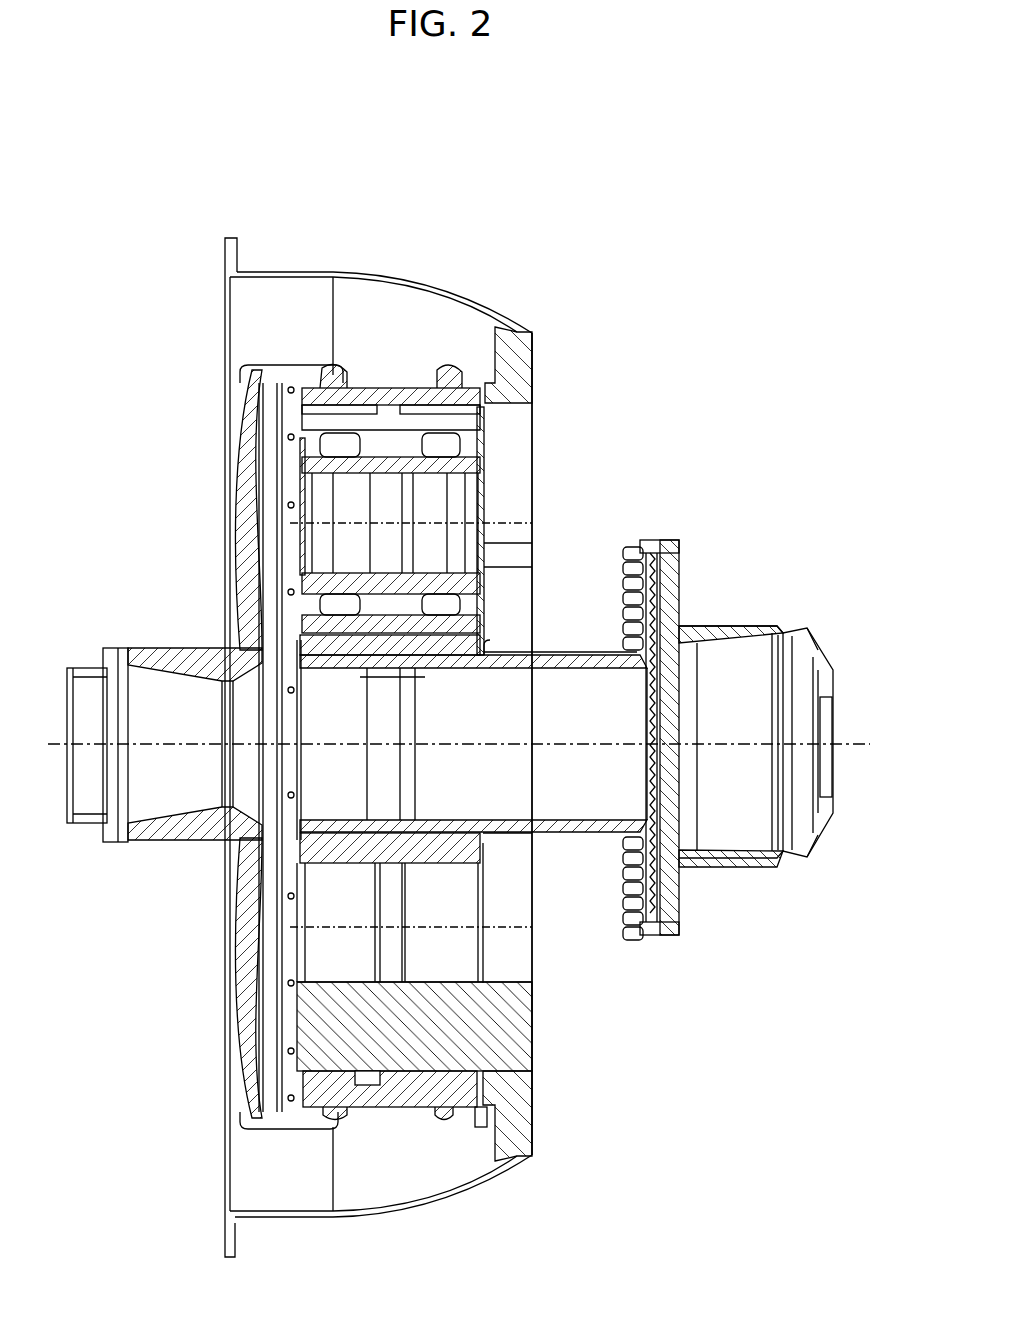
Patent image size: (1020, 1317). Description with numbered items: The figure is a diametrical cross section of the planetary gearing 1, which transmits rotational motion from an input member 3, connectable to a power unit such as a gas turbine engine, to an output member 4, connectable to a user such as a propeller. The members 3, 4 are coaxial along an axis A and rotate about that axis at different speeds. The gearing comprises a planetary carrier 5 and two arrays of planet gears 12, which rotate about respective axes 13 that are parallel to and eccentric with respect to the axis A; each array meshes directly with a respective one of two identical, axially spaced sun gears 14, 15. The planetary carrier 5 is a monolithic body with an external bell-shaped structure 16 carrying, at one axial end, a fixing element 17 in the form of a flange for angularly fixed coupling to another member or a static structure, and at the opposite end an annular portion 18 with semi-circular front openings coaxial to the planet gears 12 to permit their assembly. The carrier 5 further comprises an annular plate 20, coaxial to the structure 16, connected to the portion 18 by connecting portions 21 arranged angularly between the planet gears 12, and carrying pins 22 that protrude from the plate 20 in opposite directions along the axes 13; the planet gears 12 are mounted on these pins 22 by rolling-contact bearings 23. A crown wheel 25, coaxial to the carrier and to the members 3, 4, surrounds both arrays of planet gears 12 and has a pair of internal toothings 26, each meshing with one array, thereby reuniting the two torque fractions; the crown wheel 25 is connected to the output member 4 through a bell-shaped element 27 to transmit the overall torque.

The planetary gearing 1 is at (683, 258).
The input member 3 is at (765, 737).
The output member 4 is at (140, 643).
The planetary carrier 5 is at (391, 717).
The planet gears 12 is at (485, 420).
The axes 13 is at (490, 527).
The sun gear 14 is at (290, 630).
The sun gear 15 is at (487, 623).
The bell-shaped structure 16 is at (390, 273).
The fixing element 17 is at (225, 247).
The annular portion 18 is at (533, 334).
The annular plate 20 is at (378, 953).
The connecting portions 21 is at (413, 1097).
The pins 22 is at (485, 470).
The rolling-contact bearings 23 is at (485, 443).
The crown wheel 25 is at (391, 365).
The internal toothing 26 is at (353, 387).
The bell-shaped element 27 is at (290, 388).
The axis A is at (837, 743).